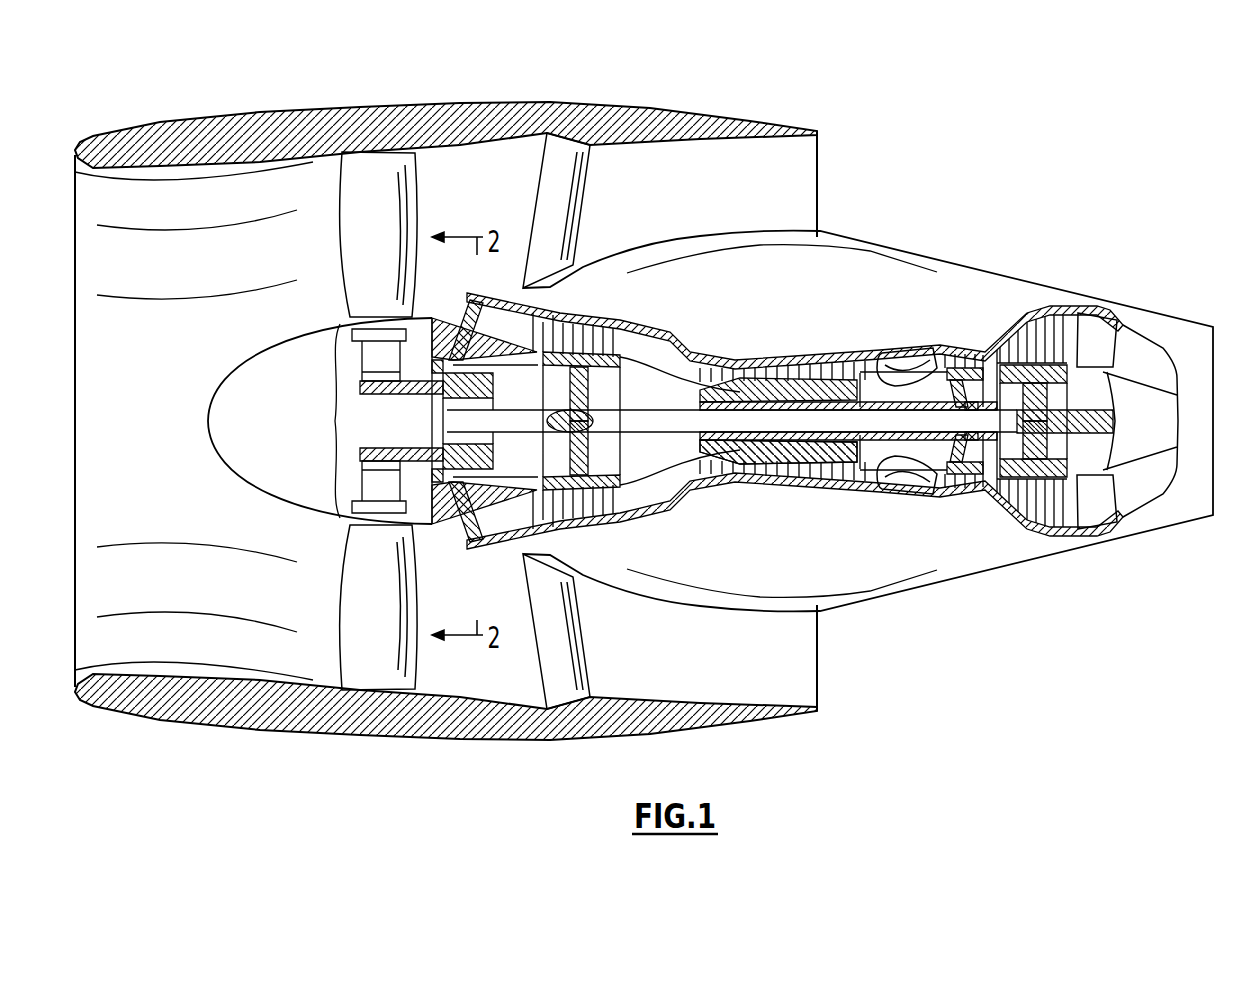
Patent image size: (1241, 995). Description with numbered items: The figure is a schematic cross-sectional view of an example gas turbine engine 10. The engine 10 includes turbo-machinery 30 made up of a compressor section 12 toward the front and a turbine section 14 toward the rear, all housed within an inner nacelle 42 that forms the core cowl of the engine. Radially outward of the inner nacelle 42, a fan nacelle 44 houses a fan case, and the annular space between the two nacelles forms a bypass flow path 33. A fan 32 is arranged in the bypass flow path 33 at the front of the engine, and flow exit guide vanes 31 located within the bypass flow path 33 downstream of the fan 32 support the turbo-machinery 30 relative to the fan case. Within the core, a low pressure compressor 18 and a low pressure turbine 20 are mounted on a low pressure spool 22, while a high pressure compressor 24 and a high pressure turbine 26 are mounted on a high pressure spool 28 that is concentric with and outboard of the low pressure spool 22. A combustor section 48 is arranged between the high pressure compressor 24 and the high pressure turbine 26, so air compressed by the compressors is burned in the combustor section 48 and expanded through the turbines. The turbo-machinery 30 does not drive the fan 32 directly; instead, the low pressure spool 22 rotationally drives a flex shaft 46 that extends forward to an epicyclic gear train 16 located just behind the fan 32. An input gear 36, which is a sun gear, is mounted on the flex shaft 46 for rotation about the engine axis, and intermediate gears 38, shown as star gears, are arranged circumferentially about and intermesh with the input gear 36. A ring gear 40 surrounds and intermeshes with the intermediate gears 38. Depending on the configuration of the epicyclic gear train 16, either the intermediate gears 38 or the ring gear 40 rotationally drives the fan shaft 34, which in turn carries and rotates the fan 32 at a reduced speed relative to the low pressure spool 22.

The gas turbine engine 10 is at (687, 76).
The compressor section 12 is at (674, 452).
The turbine section 14 is at (888, 445).
The epicyclic gear train 16 is at (428, 418).
The low pressure compressor 18 is at (599, 306).
The low pressure turbine 20 is at (1034, 306).
The low pressure spool 22 is at (706, 420).
The high pressure compressor 24 is at (734, 360).
The high pressure turbine 26 is at (963, 332).
The high pressure spool 28 is at (867, 443).
The turbo-machinery 30 is at (803, 502).
The flow exit guide vanes 31 is at (563, 644).
The fan 32 is at (362, 252).
The bypass flow path 33 is at (488, 203).
The fan shaft 34 is at (406, 527).
The input gear 36 is at (520, 522).
The intermediate gears 38 is at (446, 322).
The ring gear 40 is at (475, 507).
The inner nacelle 42 is at (890, 598).
The fan nacelle 44 is at (494, 737).
The flex shaft 46 is at (517, 430).
The combustor section 48 is at (904, 336).